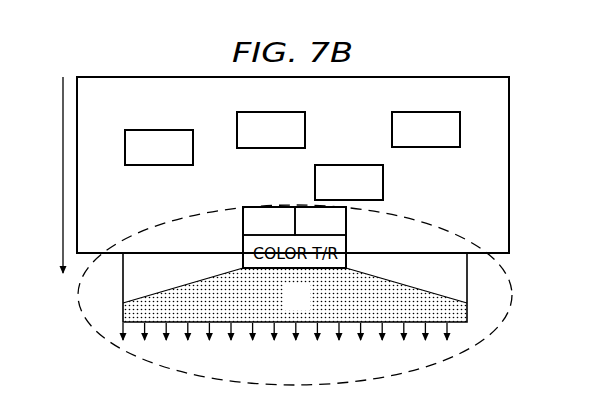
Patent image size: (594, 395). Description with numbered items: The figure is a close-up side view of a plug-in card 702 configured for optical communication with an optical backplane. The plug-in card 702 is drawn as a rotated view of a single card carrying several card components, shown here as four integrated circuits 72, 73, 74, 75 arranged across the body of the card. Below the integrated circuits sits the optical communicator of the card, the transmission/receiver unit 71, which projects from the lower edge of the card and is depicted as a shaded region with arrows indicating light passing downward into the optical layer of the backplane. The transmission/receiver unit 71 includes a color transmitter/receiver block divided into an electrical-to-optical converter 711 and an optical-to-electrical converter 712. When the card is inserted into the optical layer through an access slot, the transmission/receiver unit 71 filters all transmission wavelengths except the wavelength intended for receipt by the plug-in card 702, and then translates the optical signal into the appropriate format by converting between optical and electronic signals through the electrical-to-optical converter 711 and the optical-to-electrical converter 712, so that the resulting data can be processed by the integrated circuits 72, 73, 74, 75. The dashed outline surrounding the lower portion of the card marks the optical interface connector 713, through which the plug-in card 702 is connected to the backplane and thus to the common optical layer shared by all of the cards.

The plug-in card 702 is at (142, 76).
The integrated circuit 72 is at (158, 165).
The integrated circuit 73 is at (272, 148).
The integrated circuit 74 is at (347, 164).
The integrated circuit 75 is at (427, 147).
The electrical-to-optical converter 711 is at (243, 226).
The optical-to-electrical converter 712 is at (346, 226).
The transmission/receiver unit 71 is at (308, 307).
The optical interface connector 713 is at (513, 296).